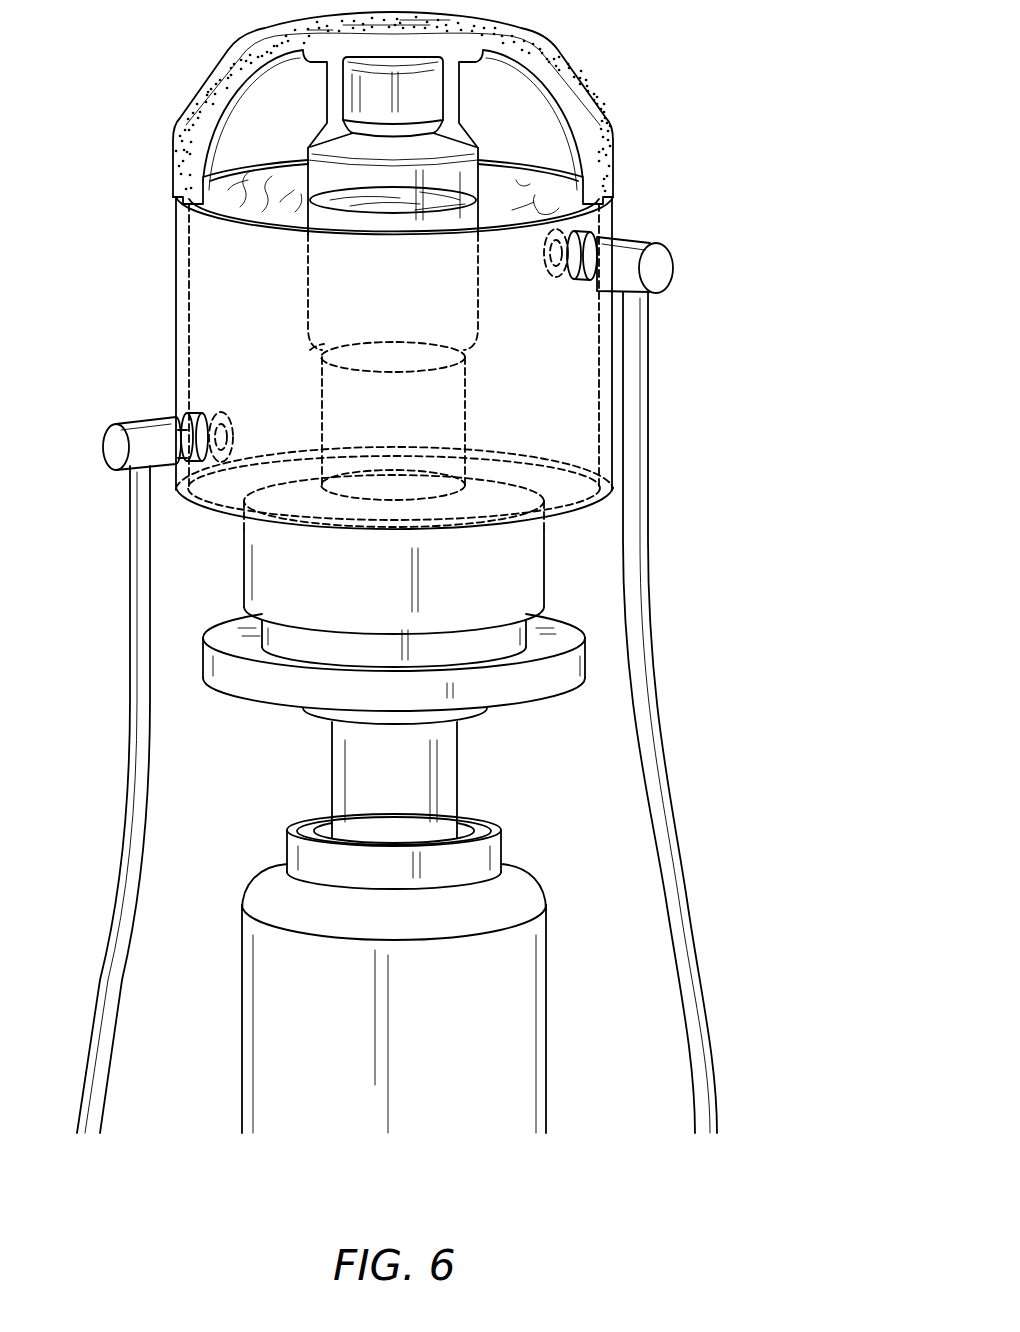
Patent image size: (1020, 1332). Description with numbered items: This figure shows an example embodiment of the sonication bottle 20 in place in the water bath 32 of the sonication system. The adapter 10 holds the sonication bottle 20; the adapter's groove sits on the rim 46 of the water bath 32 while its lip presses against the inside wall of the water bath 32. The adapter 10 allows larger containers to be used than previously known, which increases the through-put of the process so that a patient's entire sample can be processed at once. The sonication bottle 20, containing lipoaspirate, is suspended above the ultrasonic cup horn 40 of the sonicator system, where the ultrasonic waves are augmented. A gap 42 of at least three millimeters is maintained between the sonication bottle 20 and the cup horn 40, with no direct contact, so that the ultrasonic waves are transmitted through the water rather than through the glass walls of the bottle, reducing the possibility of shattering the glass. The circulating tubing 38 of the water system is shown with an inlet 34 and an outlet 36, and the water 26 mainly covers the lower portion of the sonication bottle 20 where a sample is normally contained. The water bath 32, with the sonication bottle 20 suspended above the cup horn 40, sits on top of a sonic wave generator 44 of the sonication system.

The adapter 10 is at (585, 100).
The sonication bottle 20 is at (463, 184).
The water 26 is at (264, 362).
The water bath 32 is at (555, 335).
The inlet 34 is at (176, 420).
The outlet 36 is at (613, 230).
The circulating tubing 38 is at (136, 858).
The ultrasonic cup horn 40 is at (457, 410).
The gap 42 is at (470, 349).
The sonic wave generator 44 is at (515, 997).
The rim 46 is at (261, 157).